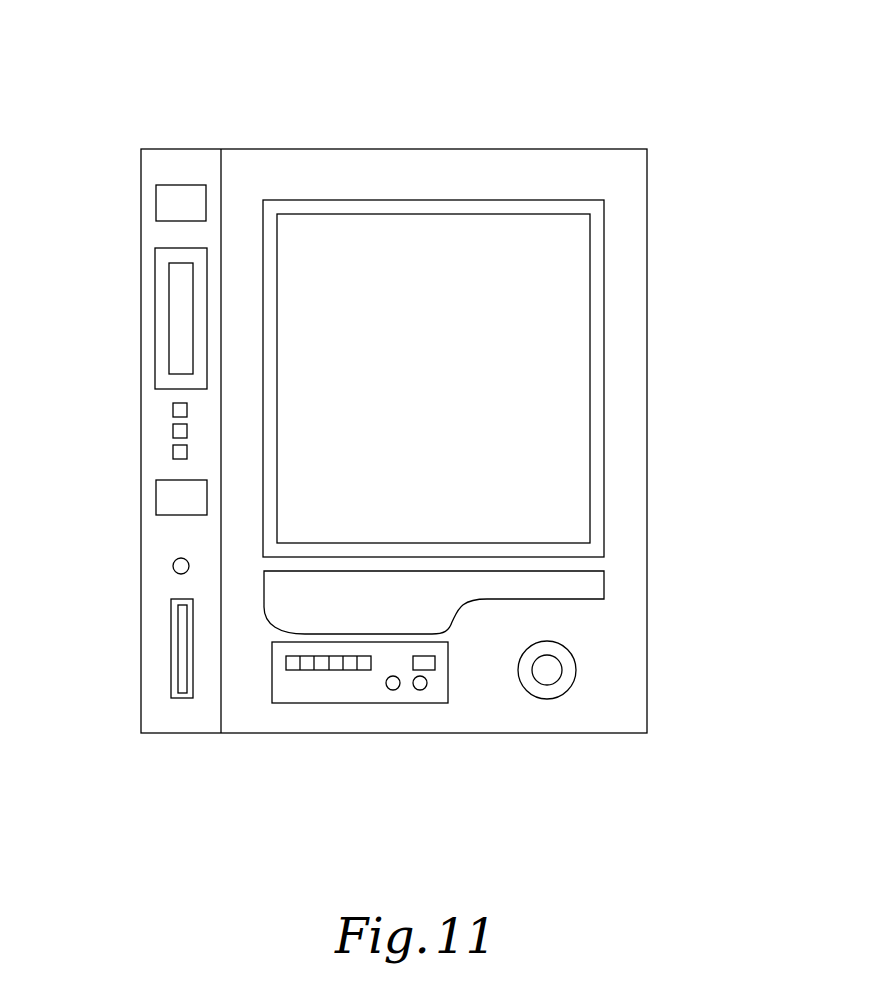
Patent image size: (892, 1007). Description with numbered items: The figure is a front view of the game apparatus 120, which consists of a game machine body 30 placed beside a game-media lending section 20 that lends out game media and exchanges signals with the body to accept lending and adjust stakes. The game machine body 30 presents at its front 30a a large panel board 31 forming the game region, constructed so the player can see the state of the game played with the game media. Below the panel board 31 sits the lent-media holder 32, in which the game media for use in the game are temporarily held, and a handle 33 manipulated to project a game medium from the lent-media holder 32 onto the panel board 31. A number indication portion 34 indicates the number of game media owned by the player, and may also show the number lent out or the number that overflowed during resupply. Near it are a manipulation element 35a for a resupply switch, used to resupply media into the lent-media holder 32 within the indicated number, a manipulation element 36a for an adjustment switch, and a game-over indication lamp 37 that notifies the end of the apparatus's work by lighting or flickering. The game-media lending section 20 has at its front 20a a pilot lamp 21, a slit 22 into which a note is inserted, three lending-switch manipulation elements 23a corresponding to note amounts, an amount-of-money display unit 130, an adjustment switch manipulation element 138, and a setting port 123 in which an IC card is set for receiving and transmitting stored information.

The game apparatus 120 is at (493, 108).
The game-media lending section 20 is at (187, 148).
The front of the game-media lending machine 20a is at (207, 171).
The pilot lamp 21 is at (156, 214).
The slit 22 is at (169, 328).
The lending-switch manipulation elements 23a is at (173, 409).
The amount of money display unit 130 is at (157, 502).
The adjustment switch manipulation element 138 is at (173, 567).
The setting port 123 is at (172, 678).
The game machine body 30 is at (632, 203).
The front of the game machine body 30a is at (630, 262).
The panel board 31 is at (565, 337).
The lent-media holder 32 is at (600, 580).
The handle 33 is at (577, 665).
The number indication portion 34 is at (342, 670).
The manipulation element for a resupply switch 35a is at (397, 690).
The manipulation element for an adjustment switch 36a is at (428, 690).
The game-over indication lamp 37 is at (435, 664).